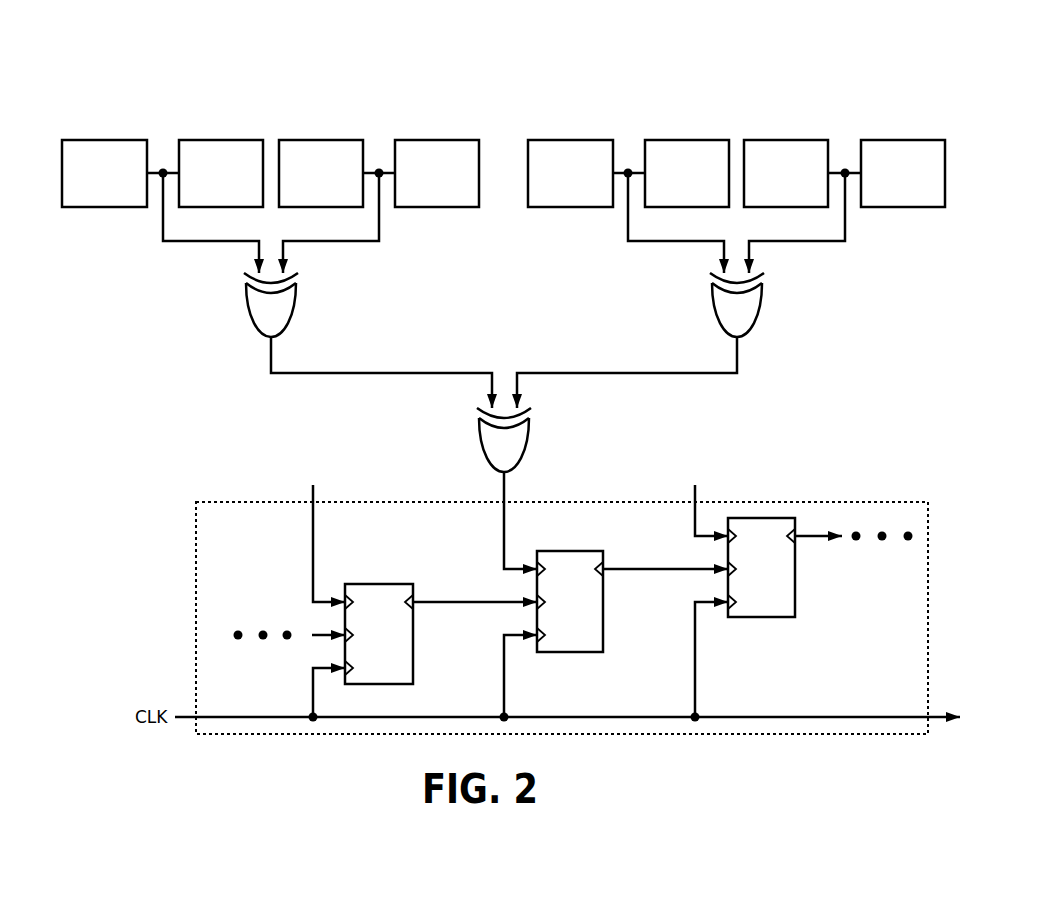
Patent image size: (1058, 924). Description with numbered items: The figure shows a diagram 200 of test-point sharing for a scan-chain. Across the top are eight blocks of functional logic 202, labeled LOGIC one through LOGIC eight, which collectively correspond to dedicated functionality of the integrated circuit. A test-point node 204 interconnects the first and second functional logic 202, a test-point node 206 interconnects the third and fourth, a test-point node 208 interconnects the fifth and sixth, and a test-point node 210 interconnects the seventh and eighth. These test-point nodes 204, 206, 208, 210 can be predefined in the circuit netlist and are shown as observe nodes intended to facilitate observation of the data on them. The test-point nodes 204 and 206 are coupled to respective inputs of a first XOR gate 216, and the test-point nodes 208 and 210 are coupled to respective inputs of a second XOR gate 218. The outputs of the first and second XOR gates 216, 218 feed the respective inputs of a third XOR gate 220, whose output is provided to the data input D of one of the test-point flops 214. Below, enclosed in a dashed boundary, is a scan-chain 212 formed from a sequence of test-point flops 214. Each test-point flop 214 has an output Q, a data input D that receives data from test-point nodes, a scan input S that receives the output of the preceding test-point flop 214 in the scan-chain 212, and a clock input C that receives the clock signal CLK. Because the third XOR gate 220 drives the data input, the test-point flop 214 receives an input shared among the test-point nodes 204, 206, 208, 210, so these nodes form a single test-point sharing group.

The diagram 200 is at (140, 45).
The functional logic 202 is at (494, 155).
The test-point node 204 is at (154, 219).
The test-point node 206 is at (388, 218).
The test-point node 208 is at (619, 222).
The test-point node 210 is at (853, 221).
The scan-chain 212 is at (262, 502).
The test-point flop 214 is at (573, 601).
The first XOR gate 216 is at (252, 315).
The second XOR gate 218 is at (716, 315).
The third XOR gate 220 is at (483, 442).